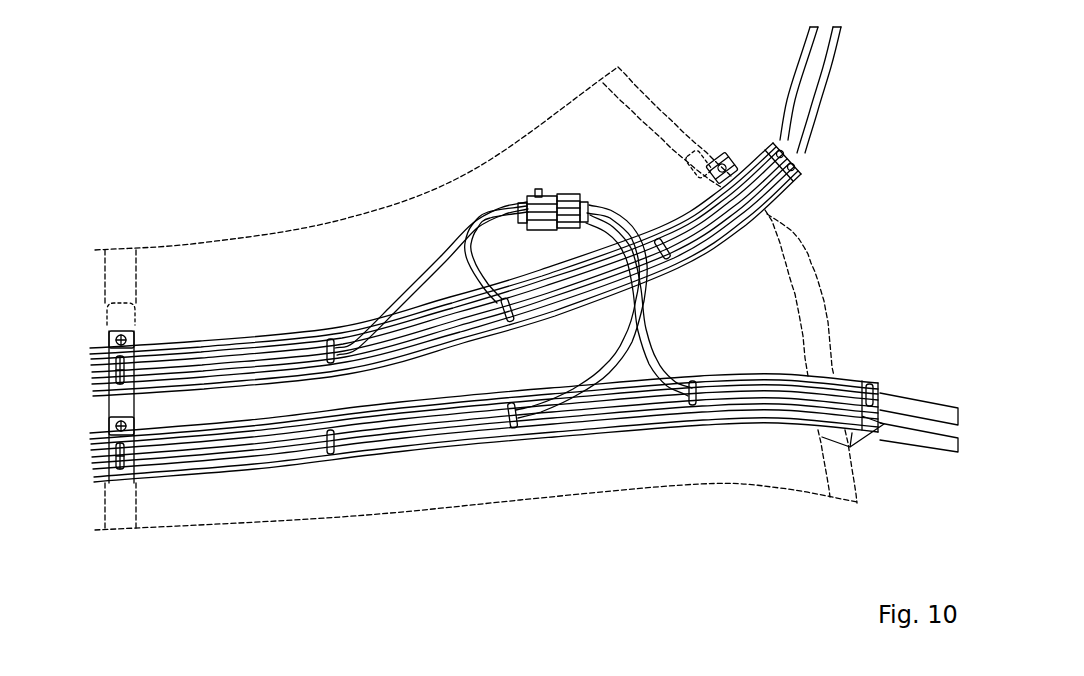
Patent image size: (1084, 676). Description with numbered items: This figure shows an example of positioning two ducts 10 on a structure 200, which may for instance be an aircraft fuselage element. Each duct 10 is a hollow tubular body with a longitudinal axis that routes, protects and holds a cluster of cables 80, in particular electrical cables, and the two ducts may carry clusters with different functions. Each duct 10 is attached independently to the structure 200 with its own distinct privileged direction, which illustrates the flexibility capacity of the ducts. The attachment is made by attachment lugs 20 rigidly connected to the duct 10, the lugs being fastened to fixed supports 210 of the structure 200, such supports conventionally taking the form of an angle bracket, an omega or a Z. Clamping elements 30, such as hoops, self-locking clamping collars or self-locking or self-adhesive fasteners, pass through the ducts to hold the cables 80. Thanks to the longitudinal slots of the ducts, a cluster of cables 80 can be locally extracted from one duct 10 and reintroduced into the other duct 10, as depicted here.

The duct 10 is at (684, 213).
The attachment lug 20 is at (130, 341).
The clamping element 30 is at (333, 363).
The cluster of cables 80 is at (812, 44).
The structure 200 is at (213, 252).
The fixed support 210 is at (118, 316).